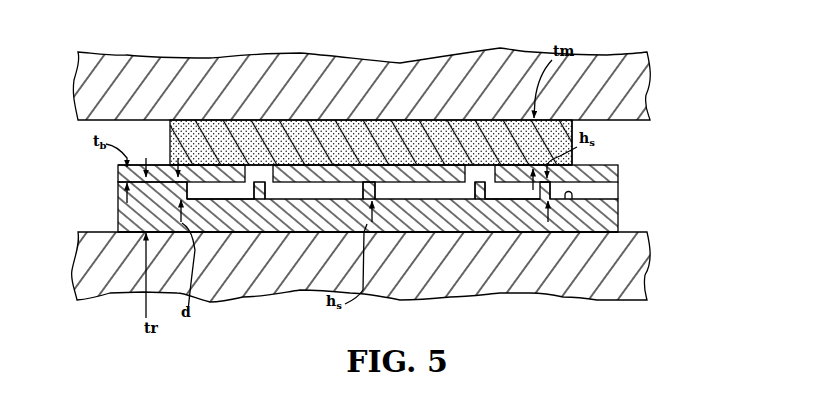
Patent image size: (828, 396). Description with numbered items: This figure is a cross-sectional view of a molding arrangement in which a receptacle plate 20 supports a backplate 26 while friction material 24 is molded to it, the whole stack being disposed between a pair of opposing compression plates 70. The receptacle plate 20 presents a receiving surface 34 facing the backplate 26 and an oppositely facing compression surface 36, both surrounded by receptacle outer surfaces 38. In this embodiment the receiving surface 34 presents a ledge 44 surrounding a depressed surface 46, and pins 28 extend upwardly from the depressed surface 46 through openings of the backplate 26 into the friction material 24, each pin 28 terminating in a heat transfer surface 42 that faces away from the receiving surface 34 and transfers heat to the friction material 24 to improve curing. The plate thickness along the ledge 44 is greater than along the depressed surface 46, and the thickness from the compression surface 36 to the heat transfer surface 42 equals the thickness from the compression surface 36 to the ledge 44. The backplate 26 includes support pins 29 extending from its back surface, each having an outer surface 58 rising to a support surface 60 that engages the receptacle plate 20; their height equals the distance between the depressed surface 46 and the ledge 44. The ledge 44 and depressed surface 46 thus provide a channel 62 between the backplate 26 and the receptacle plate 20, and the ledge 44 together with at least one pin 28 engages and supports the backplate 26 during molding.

The receptacle plate 20 is at (376, 181).
The friction material 24 is at (374, 117).
The backplate 26 is at (614, 157).
The pin 28 is at (268, 191).
The support pin 29 is at (190, 191).
The receiving surface 34 is at (137, 176).
The compression surface 36 is at (137, 233).
The receptacle outer surfaces 38 is at (118, 209).
The heat transfer surface 42 is at (261, 179).
The ledge 44 is at (618, 175).
The depressed surface 46 is at (566, 200).
The outer surface 58 is at (553, 192).
The support surface 60 is at (546, 201).
The channel 62 is at (237, 198).
The compression plates 70 is at (650, 83).